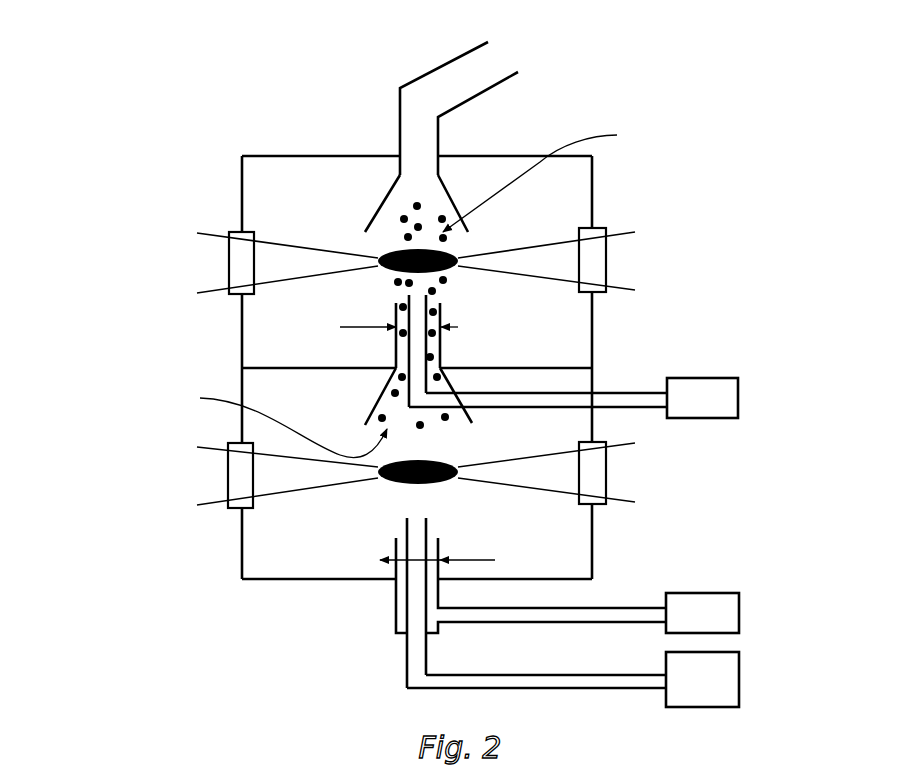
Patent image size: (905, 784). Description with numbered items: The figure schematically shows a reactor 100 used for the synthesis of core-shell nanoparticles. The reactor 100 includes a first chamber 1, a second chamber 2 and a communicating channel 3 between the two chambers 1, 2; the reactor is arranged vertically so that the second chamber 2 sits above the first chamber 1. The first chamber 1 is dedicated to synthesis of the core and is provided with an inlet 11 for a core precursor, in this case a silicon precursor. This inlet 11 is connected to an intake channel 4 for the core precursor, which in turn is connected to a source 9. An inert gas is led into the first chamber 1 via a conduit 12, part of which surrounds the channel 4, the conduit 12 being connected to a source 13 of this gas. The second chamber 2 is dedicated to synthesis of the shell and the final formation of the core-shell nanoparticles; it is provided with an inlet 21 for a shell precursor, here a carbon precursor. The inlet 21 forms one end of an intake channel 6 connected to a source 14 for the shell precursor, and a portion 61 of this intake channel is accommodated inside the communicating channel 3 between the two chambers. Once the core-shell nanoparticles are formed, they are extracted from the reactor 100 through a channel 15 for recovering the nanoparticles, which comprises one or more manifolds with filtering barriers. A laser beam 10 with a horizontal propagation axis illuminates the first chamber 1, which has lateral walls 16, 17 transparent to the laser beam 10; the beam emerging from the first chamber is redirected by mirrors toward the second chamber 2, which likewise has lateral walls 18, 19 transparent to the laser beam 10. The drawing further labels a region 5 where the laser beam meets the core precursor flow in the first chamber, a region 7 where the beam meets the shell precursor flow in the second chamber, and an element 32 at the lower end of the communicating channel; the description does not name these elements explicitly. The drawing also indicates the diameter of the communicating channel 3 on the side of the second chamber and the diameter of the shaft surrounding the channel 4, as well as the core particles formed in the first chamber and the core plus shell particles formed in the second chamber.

The first chamber 1 is at (241, 548).
The second chamber 2 is at (241, 173).
The communicating channel 3 is at (443, 349).
The intake channel 4 is at (569, 689).
The lower particle beam focus 5 is at (384, 484).
The intake channel 6 is at (641, 389).
The upper nozzle 7 is at (376, 246).
The source 9 is at (711, 708).
The laser beam 10 is at (629, 222).
The inlet 11 is at (417, 539).
The conduit 12 is at (466, 624).
The source 13 is at (709, 589).
The source 14 is at (718, 421).
The channel 15 is at (420, 70).
The lateral wall 16 is at (228, 446).
The lateral wall 17 is at (608, 512).
The lateral wall 18 is at (610, 258).
The lateral wall 19 is at (228, 260).
The inlet 21 is at (418, 312).
The outer nozzle wall 32 is at (364, 407).
The portion 61 is at (440, 302).
The reactor 100 is at (150, 352).